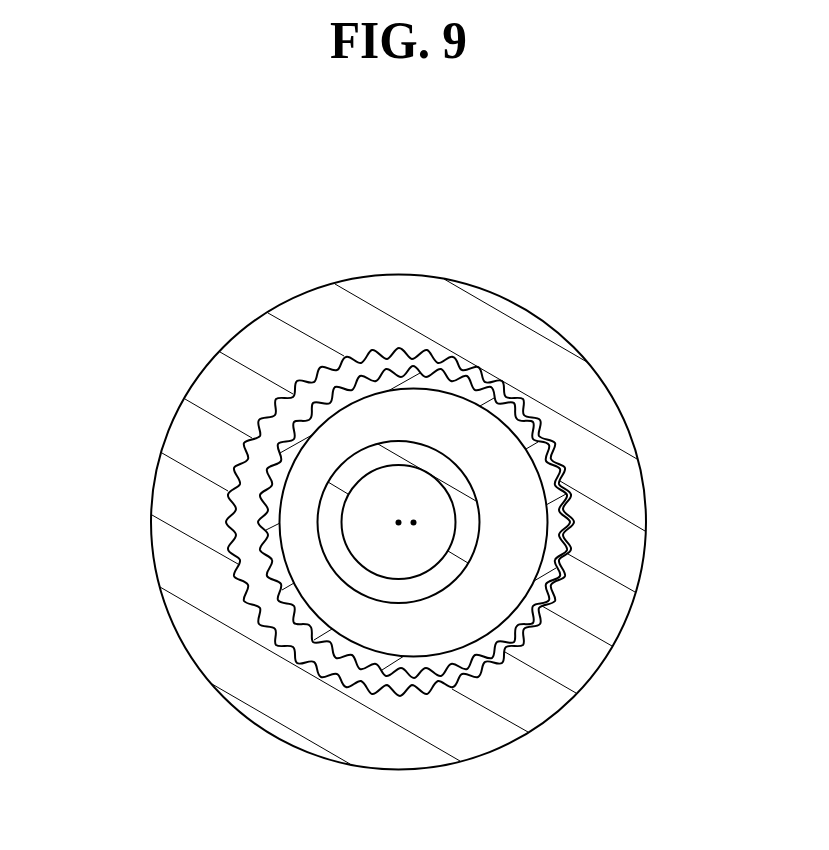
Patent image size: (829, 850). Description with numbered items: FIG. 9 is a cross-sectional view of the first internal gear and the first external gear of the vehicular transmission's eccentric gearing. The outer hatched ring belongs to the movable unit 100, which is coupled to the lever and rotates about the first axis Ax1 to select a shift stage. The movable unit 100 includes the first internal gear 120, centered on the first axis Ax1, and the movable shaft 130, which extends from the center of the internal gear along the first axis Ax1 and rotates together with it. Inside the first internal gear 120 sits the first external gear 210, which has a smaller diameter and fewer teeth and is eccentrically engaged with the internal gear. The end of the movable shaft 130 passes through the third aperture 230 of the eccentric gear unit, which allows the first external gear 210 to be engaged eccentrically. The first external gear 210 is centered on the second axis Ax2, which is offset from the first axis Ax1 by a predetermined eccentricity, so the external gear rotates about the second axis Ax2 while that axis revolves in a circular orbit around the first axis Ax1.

The movable unit 100 is at (606, 358).
The first internal gear 120 is at (303, 662).
The movable shaft 130 is at (417, 453).
The first external gear 210 is at (438, 663).
The third aperture 230 is at (302, 592).
The first axis Ax1 is at (398, 522).
The second axis Ax2 is at (414, 522).